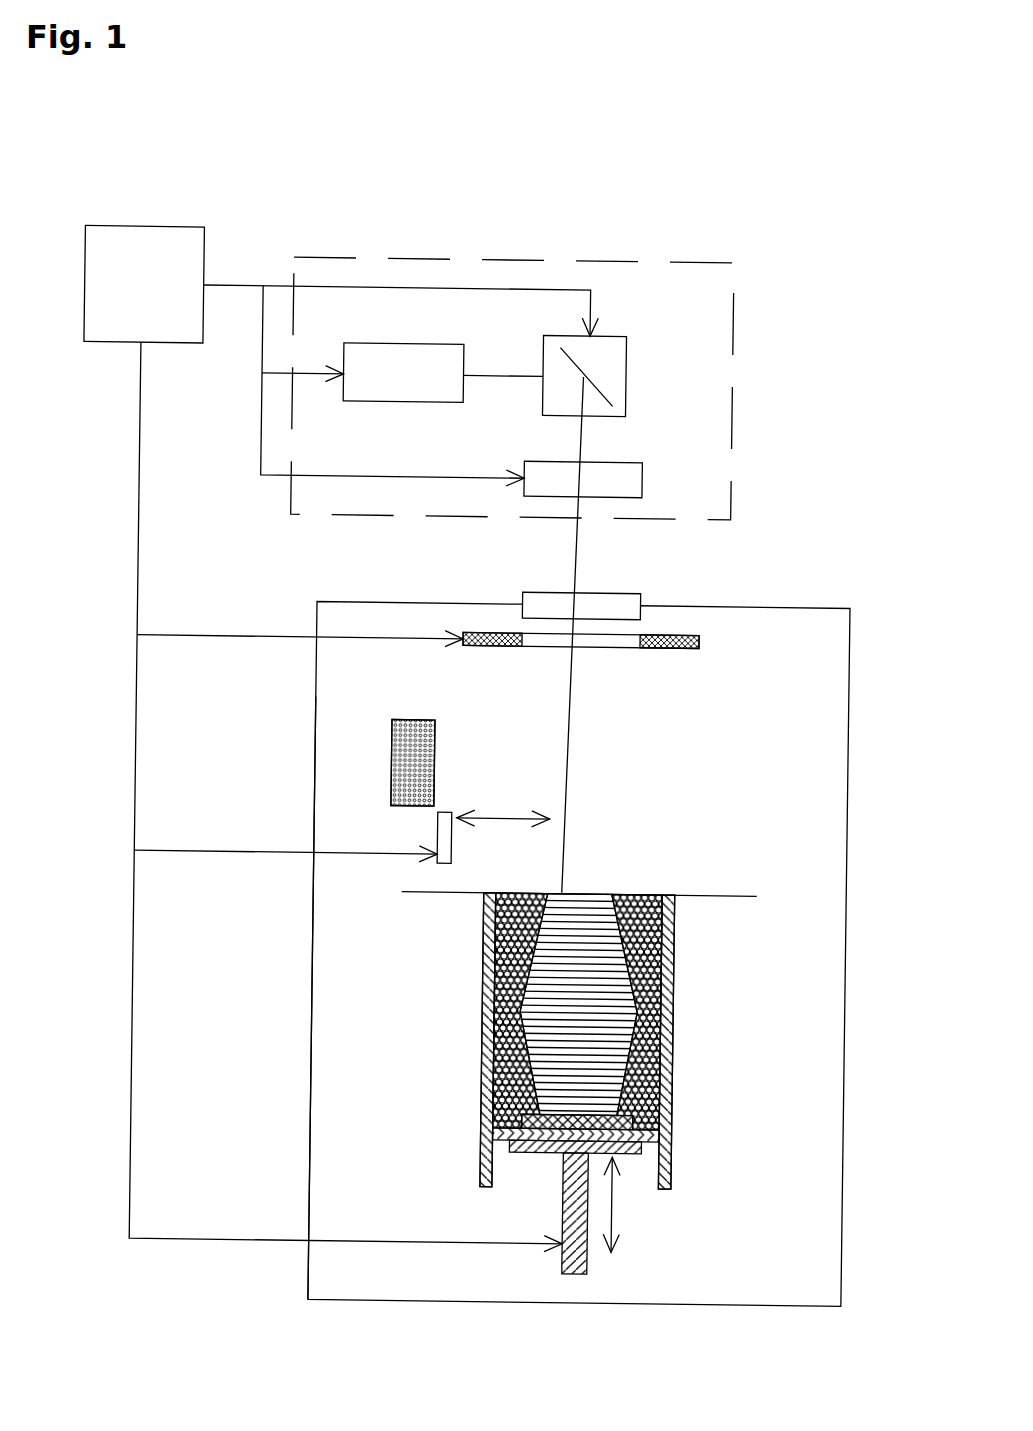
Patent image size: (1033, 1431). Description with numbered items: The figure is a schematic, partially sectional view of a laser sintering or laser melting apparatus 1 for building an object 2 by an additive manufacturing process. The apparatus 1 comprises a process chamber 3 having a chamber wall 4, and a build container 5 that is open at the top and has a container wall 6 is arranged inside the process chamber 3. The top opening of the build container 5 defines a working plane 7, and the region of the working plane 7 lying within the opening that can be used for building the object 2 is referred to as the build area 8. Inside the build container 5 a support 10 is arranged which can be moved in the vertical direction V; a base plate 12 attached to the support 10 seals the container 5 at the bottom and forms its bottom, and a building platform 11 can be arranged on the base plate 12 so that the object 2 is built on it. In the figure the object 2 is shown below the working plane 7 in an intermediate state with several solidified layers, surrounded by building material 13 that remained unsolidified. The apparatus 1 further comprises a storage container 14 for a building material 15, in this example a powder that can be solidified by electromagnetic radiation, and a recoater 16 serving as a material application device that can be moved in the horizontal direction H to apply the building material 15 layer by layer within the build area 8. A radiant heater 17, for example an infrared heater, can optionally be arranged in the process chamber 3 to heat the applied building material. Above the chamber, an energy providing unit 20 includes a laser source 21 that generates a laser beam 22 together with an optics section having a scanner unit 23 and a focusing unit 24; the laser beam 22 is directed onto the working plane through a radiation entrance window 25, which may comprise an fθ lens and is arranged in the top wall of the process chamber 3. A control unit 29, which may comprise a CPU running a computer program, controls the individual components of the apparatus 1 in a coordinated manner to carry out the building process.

The laser sintering or laser melting apparatus 1 is at (840, 199).
The object 2 is at (602, 950).
The process chamber 3 is at (760, 641).
The chamber wall 4 is at (312, 1094).
The build container 5 is at (675, 1099).
The container wall 6 is at (668, 1039).
The working plane 7 is at (726, 895).
The build area 8 is at (636, 896).
The support 10 is at (553, 1150).
The building platform 11 is at (518, 1141).
The building platform 12 is at (499, 1121).
The building material 13 is at (495, 941).
The storage container 14 is at (405, 722).
The building material 15 is at (432, 764).
The recoater 16 is at (436, 833).
The radiant heater 17 is at (484, 633).
The energy providing unit 20 is at (726, 376).
The laser source 21 is at (394, 402).
The laser beam 22 is at (475, 376).
The scanner unit 23 is at (606, 348).
The focusing unit 24 is at (606, 475).
The radiation entrance window 25 is at (612, 604).
The control unit 29 is at (335, 738).